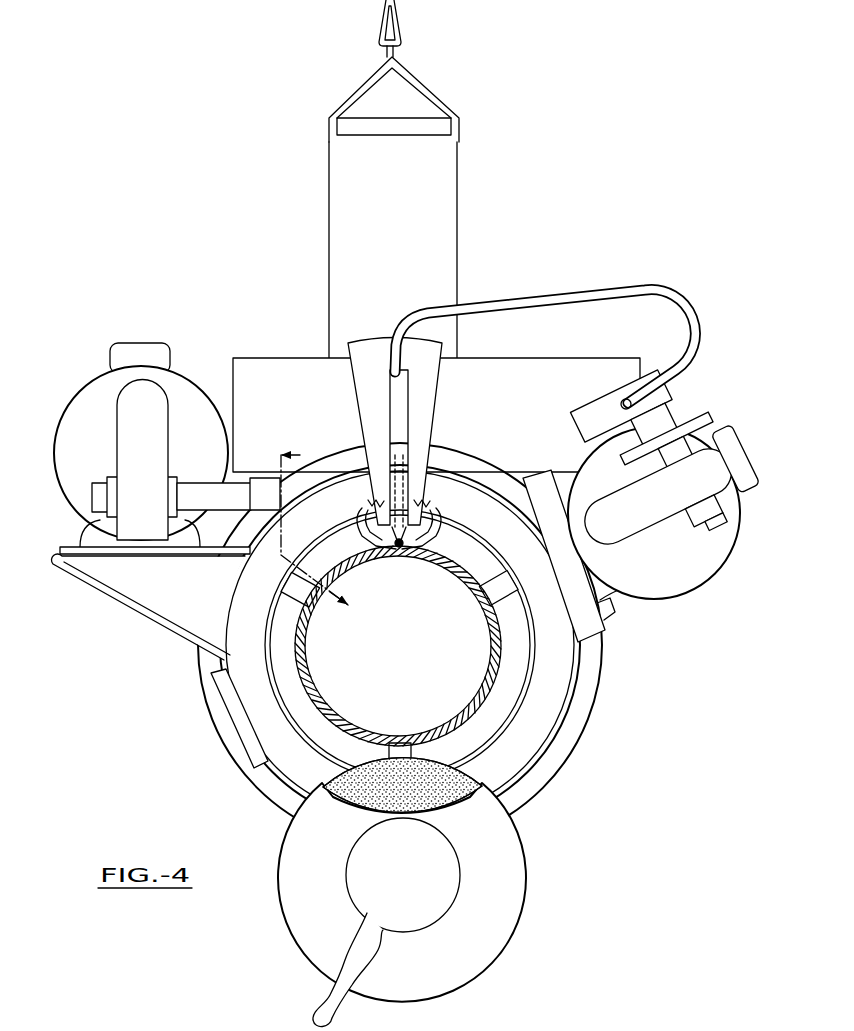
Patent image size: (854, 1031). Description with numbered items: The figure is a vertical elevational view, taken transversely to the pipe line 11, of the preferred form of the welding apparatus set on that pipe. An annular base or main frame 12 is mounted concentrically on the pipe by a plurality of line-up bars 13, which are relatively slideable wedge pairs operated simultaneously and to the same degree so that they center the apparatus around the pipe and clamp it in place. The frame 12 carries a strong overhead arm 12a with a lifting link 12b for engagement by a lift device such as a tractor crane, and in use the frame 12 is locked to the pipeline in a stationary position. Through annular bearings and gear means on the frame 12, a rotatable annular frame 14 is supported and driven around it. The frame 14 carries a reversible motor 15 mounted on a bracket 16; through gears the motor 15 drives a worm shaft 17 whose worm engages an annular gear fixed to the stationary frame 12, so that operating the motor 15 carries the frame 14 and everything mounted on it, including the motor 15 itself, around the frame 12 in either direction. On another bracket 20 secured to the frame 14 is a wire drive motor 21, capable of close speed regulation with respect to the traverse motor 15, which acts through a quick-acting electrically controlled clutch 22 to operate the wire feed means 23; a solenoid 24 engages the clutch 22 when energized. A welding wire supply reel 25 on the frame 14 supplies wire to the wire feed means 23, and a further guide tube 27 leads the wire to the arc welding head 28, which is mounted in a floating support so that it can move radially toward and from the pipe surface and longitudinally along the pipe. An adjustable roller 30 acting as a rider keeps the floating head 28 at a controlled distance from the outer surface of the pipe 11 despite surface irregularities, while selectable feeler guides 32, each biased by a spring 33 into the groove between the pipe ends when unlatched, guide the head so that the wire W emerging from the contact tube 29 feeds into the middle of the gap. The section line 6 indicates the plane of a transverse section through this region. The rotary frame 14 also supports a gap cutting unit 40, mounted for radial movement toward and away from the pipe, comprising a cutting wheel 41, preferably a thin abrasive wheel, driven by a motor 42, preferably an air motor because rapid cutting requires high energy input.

The section line 6- 6 is at (326, 524).
The pipe line 11 is at (306, 657).
The annular base or main frame 12 is at (496, 657).
The overhead arm 12a is at (452, 216).
The lifting link 12b is at (400, 14).
The line-up bars 13 is at (300, 590).
The rotatable annular frame 14 is at (563, 702).
The reversible motor 15 is at (76, 402).
The bracket 16 is at (95, 588).
The worm shaft 17 is at (186, 484).
The bracket 20 is at (612, 613).
The wire drive motor 21 is at (718, 548).
The clutch 22 is at (708, 420).
The wire feed means 23 is at (594, 402).
The solenoid 24 is at (722, 506).
The welding wire supply spool or reel 25 is at (546, 362).
The guide tube 27 is at (530, 300).
The arc welding head 28 is at (412, 426).
The contact tube 29 is at (396, 470).
The adjustable roller 30 is at (408, 552).
The feeler guides 32 is at (356, 516).
The spring 33 is at (393, 499).
The wire W is at (392, 552).
The gap cutting unit 40 is at (513, 895).
The cutting wheel 41 is at (445, 805).
The motor 42 is at (445, 872).